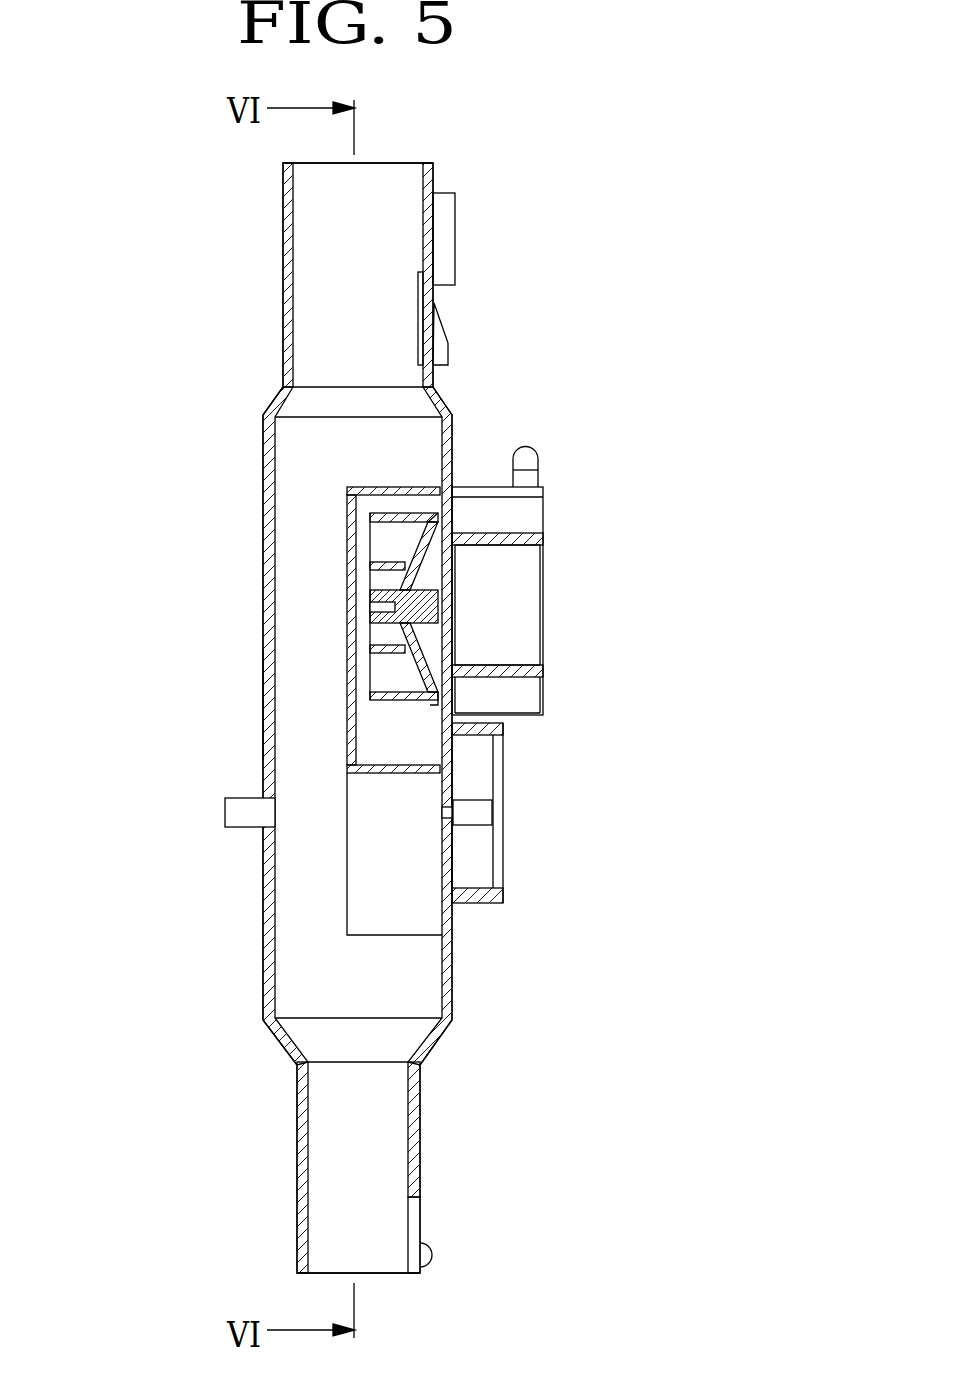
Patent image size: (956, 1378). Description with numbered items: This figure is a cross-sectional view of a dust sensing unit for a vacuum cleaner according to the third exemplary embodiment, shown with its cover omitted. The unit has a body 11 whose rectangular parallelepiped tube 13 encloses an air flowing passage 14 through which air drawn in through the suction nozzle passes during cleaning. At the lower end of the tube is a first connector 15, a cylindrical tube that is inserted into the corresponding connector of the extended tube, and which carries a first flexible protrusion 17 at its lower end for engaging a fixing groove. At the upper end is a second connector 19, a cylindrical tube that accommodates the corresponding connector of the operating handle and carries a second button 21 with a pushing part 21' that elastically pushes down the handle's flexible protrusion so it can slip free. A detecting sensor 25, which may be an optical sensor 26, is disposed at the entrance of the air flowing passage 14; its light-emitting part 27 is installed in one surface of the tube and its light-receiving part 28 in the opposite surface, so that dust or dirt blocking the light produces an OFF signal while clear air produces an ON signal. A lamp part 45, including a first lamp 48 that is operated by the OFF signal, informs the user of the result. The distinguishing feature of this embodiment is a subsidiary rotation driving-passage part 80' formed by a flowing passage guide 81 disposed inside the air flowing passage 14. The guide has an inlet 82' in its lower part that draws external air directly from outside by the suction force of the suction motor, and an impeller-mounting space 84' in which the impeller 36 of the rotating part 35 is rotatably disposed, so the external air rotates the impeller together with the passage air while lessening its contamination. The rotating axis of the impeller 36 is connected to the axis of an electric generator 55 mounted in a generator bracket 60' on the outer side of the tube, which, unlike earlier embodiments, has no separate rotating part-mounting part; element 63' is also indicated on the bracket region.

The body 11 is at (246, 623).
The rectangular parallelepiped tube 13 is at (272, 702).
The air flowing passage 14 is at (388, 980).
The first connector 15 is at (305, 1207).
The first flexible protrusion 17 is at (433, 1245).
The second connector 19 is at (281, 262).
The second button 21 is at (484, 334).
The pushing part 21' is at (470, 279).
The detecting sensor 25 is at (516, 812).
The optical sensor 26 is at (606, 742).
The light-emitting part 27 is at (480, 797).
The light-receiving part 28 is at (455, 756).
The rotating part 35 is at (455, 503).
The impeller 36 is at (393, 560).
The lamp part 45 is at (562, 428).
The first lamp 48 is at (540, 464).
The electric generator 55 is at (555, 617).
The generator bracket 60' is at (552, 687).
The bottom plate 63' is at (542, 714).
The subsidiary rotation driving-passage part 80' is at (307, 630).
The flowing passage guide 81 is at (353, 513).
The inlet 82' is at (526, 866).
The impeller-mounting space 84' is at (483, 444).